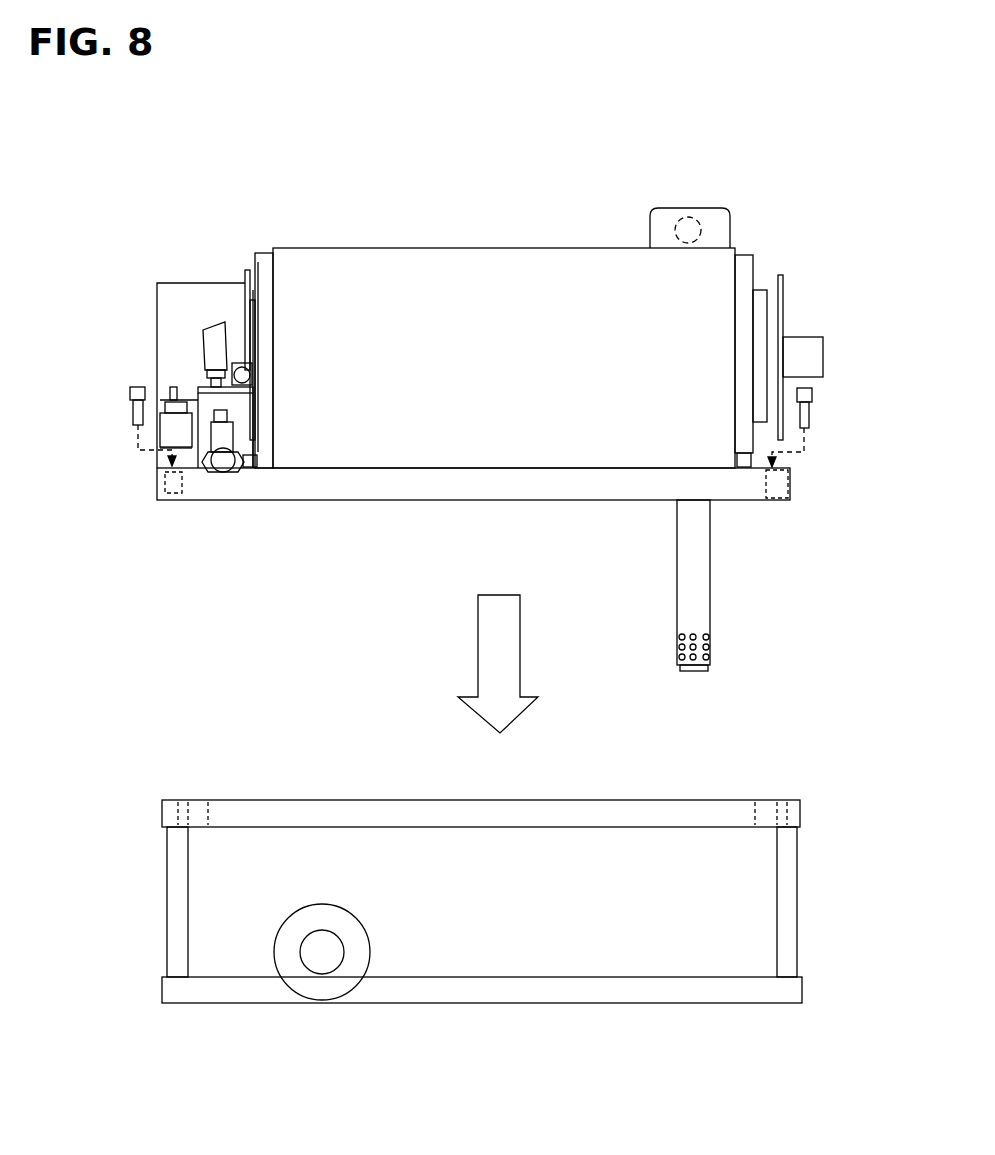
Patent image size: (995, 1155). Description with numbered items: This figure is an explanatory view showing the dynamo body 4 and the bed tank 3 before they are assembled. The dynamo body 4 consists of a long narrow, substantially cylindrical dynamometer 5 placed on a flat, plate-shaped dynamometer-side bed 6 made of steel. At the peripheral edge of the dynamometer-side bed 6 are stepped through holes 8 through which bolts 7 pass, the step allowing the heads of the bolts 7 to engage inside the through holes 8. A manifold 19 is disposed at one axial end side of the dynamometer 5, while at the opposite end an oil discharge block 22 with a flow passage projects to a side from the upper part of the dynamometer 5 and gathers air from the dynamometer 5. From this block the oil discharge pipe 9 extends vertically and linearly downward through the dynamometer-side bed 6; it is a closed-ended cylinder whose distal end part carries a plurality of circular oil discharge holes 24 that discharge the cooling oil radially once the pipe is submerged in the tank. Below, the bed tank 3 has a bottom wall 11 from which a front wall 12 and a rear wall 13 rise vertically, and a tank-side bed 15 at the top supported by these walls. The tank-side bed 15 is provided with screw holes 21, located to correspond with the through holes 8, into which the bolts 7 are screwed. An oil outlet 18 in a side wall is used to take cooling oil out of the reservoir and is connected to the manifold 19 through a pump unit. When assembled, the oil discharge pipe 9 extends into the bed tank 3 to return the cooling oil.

The bed tank 3 is at (678, 792).
The dynamo body 4 is at (600, 220).
The dynamometer 5 is at (410, 248).
The dynamometer-side bed 6 is at (322, 485).
The bolt 7 is at (128, 398).
The through hole 8 is at (163, 492).
The oil discharge pipe 9 is at (712, 560).
The bottom wall 11 is at (596, 990).
The front wall 12 is at (790, 903).
The rear wall 13 is at (178, 908).
The tank-side bed 15 is at (160, 810).
The oil outlet 18 is at (318, 990).
The manifold 19 is at (243, 445).
The screw hole 21 is at (188, 810).
The oil discharge block 22 is at (690, 222).
The oil discharge hole 24 is at (706, 634).